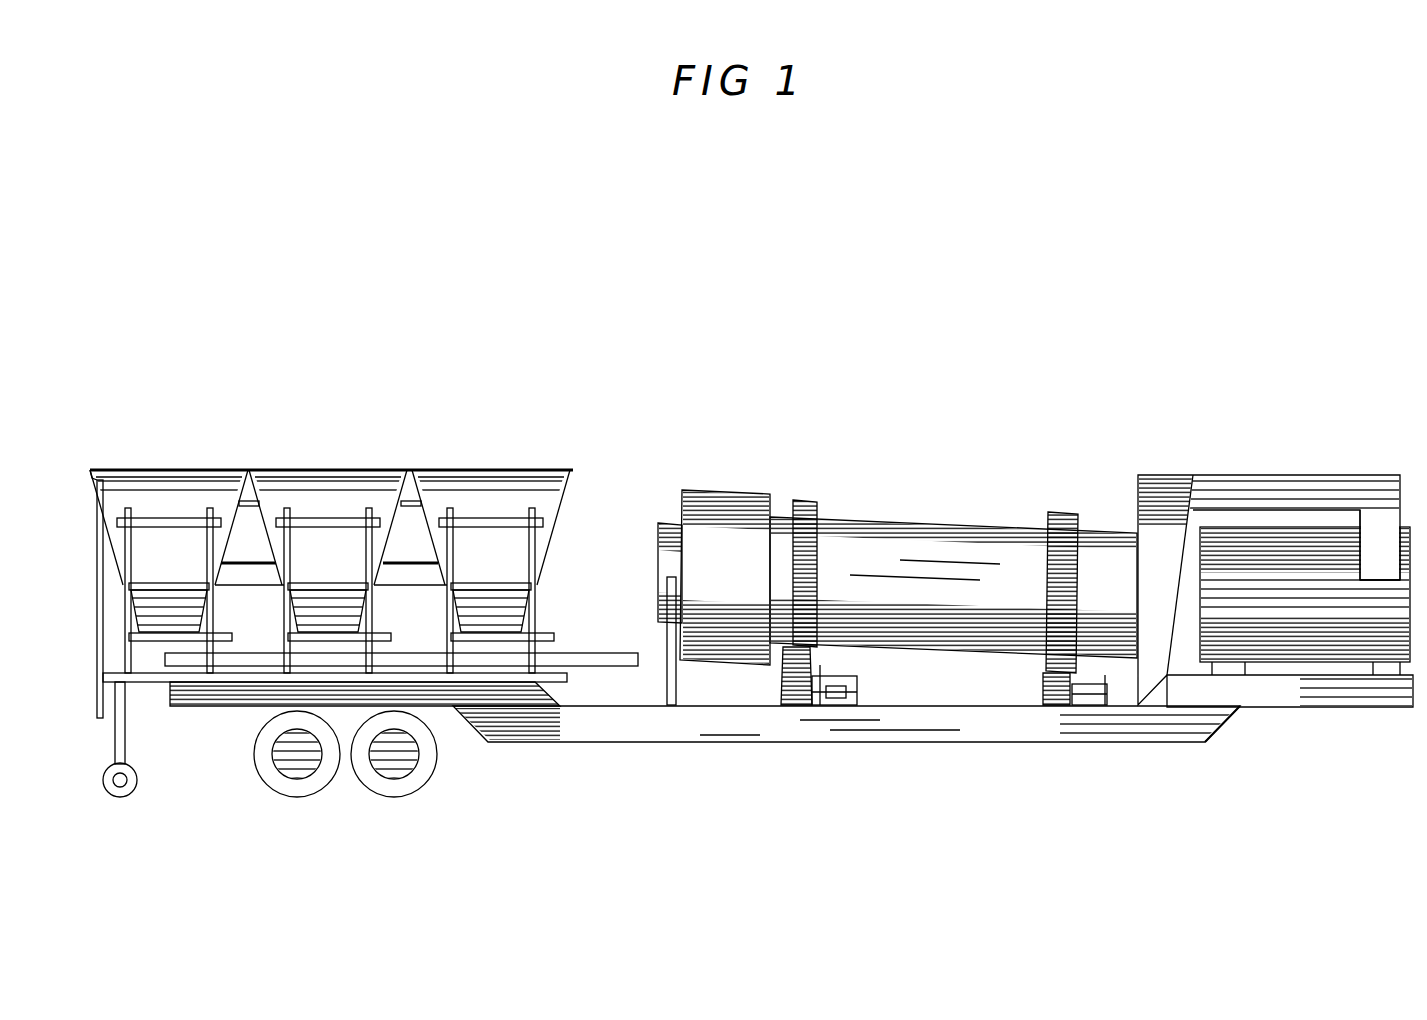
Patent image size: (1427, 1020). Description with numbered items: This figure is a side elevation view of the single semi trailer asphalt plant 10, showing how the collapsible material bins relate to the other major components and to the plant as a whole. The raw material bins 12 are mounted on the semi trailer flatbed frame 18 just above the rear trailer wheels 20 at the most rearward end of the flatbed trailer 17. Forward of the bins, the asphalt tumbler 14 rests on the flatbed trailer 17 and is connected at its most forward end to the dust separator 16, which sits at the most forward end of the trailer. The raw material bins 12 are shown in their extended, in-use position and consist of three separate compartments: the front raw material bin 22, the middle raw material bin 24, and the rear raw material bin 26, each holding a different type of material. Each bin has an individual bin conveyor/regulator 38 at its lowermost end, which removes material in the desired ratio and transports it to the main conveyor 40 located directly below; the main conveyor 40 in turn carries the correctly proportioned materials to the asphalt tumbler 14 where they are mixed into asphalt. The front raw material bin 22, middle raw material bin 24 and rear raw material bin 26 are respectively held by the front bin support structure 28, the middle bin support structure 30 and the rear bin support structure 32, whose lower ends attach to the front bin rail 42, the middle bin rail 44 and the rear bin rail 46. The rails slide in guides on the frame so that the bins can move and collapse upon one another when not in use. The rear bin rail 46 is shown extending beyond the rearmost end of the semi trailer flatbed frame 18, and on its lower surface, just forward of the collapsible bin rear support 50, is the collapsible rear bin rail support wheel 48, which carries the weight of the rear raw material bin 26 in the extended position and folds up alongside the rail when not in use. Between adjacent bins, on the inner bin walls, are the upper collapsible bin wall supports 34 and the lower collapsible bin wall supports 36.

The single semi trailer asphalt plant 10 is at (763, 460).
The raw material bins 12 is at (567, 430).
The asphalt tumbler 14 is at (912, 513).
The dust separator 16 is at (1260, 470).
The flatbed trailer 17 is at (1200, 768).
The semi trailer flatbed frame 18 is at (728, 748).
The rear trailer wheels 20 is at (442, 758).
The front raw material bin 22 is at (505, 503).
The middle raw material bin 24 is at (340, 503).
The rear raw material bin 26 is at (177, 503).
The front bin support structure 28 is at (543, 532).
The middle bin support structure 30 is at (353, 515).
The rear bin support structure 32 is at (195, 515).
The upper collapsible bin wall supports 34 is at (247, 513).
The lower collapsible bin wall supports 36 is at (248, 573).
The bin conveyor/regulator 38 is at (492, 642).
The main conveyor 40 is at (588, 650).
The front bin rail 42 is at (475, 684).
The middle bin rail 44 is at (337, 684).
The rear bin rail 46 is at (138, 688).
The collapsible rear bin rail support wheel 48 is at (127, 803).
The collapsible bin rear support 50 is at (105, 550).